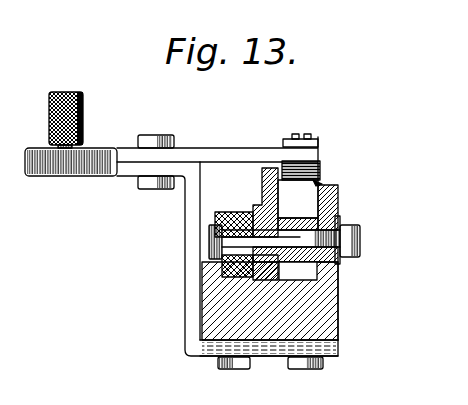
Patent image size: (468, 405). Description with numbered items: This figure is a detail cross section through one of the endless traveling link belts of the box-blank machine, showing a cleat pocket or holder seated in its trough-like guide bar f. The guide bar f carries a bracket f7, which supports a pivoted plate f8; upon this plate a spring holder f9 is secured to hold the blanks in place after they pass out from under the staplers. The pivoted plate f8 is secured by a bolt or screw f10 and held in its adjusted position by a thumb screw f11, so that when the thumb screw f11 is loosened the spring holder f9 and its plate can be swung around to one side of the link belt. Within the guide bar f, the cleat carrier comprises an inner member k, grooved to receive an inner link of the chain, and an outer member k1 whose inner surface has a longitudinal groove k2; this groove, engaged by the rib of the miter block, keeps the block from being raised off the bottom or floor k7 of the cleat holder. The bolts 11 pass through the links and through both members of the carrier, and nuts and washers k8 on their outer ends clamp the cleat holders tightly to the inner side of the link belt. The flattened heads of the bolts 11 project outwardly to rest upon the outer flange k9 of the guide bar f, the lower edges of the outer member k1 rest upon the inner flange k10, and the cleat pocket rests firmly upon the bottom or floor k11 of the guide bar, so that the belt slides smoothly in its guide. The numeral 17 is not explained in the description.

The guide bar f is at (231, 357).
The bracket f7 is at (194, 235).
The pivoted plate f8 is at (242, 130).
The spring holder f9 is at (352, 148).
The bolt or screw f10 is at (162, 107).
The thumb screw f11 is at (62, 98).
The bolts 11 is at (337, 185).
The bushing 17 is at (215, 213).
The inner member k is at (316, 272).
The outer member k1 is at (337, 213).
The longitudinal groove k2 is at (367, 189).
The bottom or floor of cleat holder k7 is at (213, 242).
The nuts and washers k8 is at (344, 233).
The outer flange k9 is at (213, 263).
The inner flange k10 is at (334, 272).
The bottom or floor of guide bar k11 is at (291, 283).